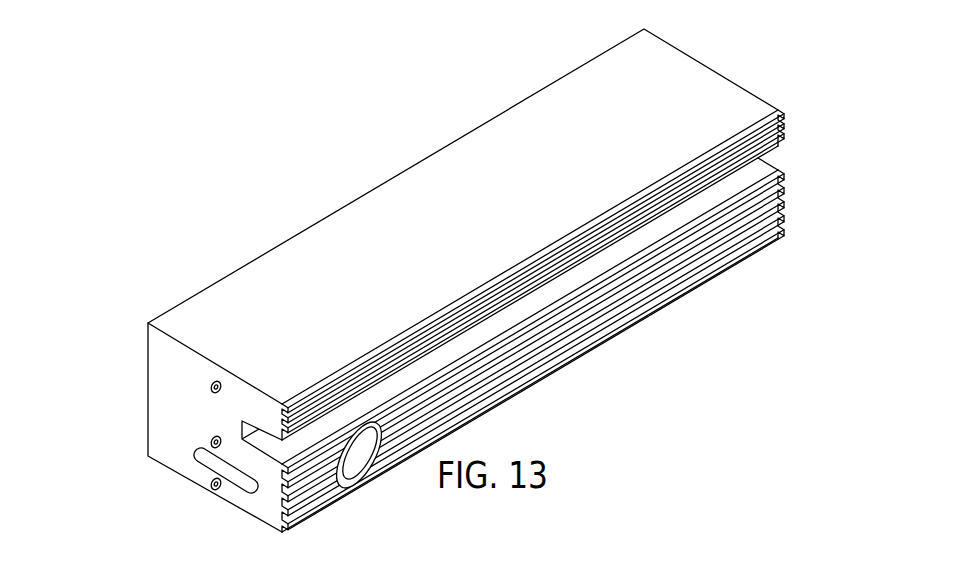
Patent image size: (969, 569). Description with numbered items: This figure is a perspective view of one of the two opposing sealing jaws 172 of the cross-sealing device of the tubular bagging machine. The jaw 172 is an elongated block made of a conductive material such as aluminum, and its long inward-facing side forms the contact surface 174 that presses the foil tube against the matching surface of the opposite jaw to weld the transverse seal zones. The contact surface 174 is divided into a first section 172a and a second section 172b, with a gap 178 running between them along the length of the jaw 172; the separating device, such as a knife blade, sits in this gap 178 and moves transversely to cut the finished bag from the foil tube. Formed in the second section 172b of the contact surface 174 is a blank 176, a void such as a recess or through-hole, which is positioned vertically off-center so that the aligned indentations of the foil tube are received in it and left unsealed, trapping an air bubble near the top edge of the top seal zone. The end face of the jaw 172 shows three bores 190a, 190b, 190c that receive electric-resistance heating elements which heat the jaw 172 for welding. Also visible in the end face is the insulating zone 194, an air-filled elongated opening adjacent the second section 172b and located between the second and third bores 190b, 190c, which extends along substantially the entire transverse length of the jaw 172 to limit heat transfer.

The sealing jaw 172 is at (564, 289).
The upper fins 172a is at (780, 120).
The lower fins 172b is at (779, 234).
The contact surface 174 is at (612, 310).
The blank 176 is at (353, 463).
The gap 178 is at (774, 162).
The bore 190a is at (211, 386).
The bore 190b is at (211, 440).
The bore 190c is at (213, 490).
The insulating zone 194 is at (204, 461).